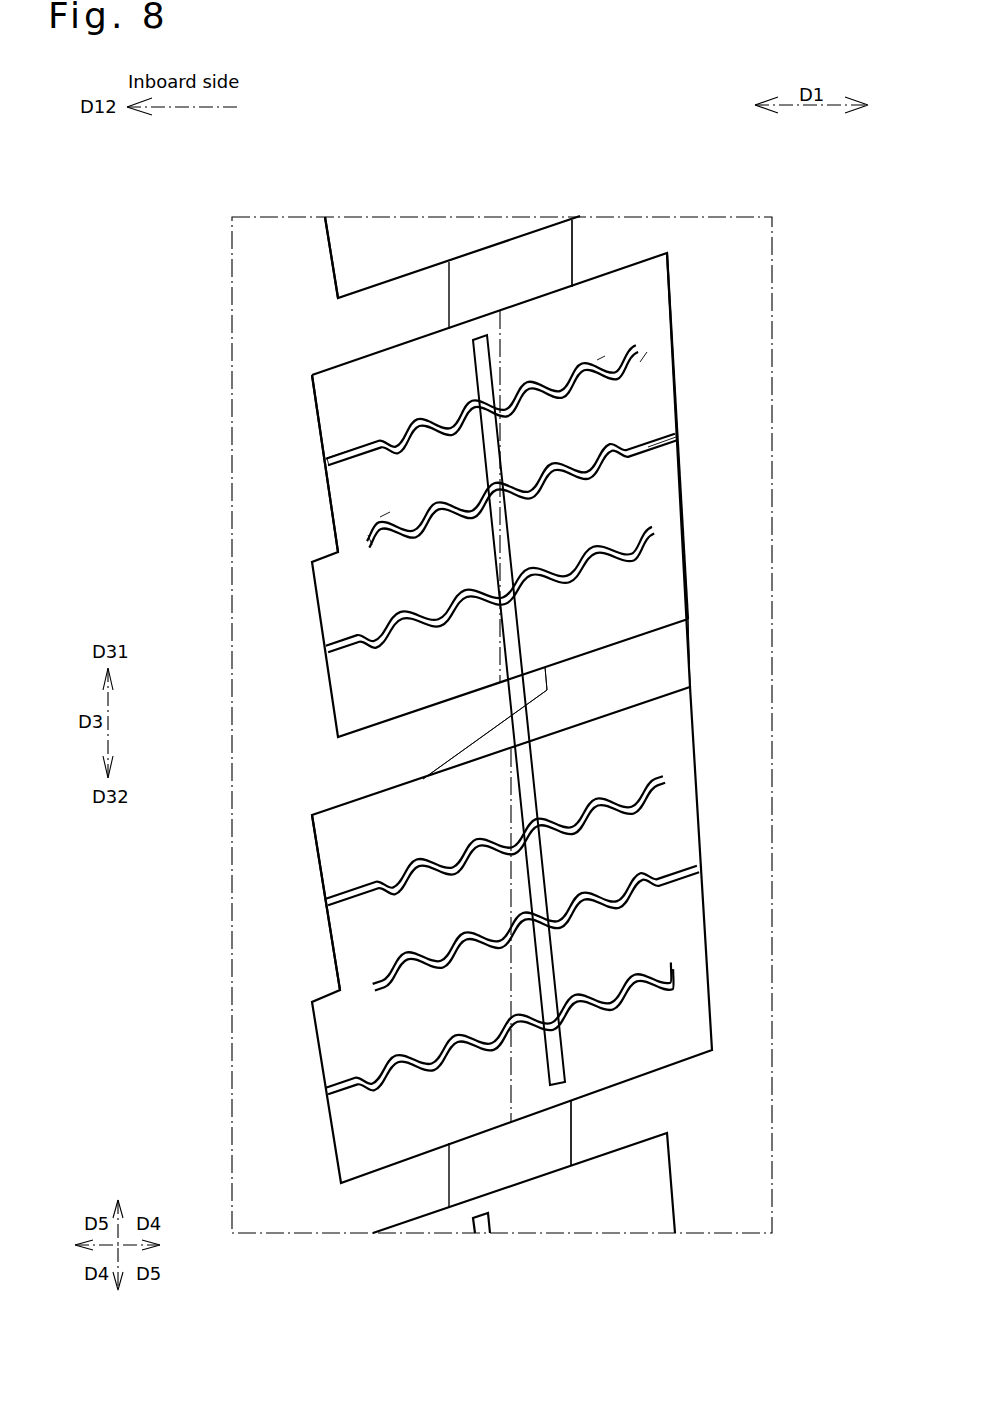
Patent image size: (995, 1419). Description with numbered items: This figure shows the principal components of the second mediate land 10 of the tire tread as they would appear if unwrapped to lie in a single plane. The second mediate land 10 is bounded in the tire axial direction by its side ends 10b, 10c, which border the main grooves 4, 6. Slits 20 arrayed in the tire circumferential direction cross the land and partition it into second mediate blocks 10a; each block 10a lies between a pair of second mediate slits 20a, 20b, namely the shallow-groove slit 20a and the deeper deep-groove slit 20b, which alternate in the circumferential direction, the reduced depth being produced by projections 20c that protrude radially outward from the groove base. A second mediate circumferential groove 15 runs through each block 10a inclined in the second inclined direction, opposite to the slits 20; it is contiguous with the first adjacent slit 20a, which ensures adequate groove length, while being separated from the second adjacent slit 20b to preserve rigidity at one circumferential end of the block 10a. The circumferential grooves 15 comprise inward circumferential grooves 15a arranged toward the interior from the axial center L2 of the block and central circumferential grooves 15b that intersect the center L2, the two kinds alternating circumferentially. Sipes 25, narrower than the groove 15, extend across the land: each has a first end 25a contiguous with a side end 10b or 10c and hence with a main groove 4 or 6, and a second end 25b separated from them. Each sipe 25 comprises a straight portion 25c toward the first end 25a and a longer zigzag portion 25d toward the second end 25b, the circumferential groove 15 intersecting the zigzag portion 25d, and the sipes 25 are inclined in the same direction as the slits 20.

The main groove 4 is at (278, 233).
The main groove 6 is at (731, 233).
The second mediate land 10 is at (494, 222).
The second mediate block 10a is at (337, 397).
The side end 10b is at (332, 265).
The side end 10c is at (670, 272).
The second mediate circumferential groove 15 is at (556, 689).
The inward circumferential groove 15a is at (527, 767).
The central circumferential groove 15b is at (473, 377).
The slit 20 is at (492, 702).
The first adjacent slit (shallow-groove slit) 20a is at (357, 776).
The second adjacent slit (deep-groove slit) 20b is at (344, 319).
The projection 20c is at (568, 238).
The sipe 25 is at (619, 395).
The first end 25a is at (327, 462).
The second end 25b is at (370, 543).
The straight portion 25c is at (353, 448).
The zigzag portion 25d is at (380, 517).
The center in the tire axial direction L2 is at (500, 662).